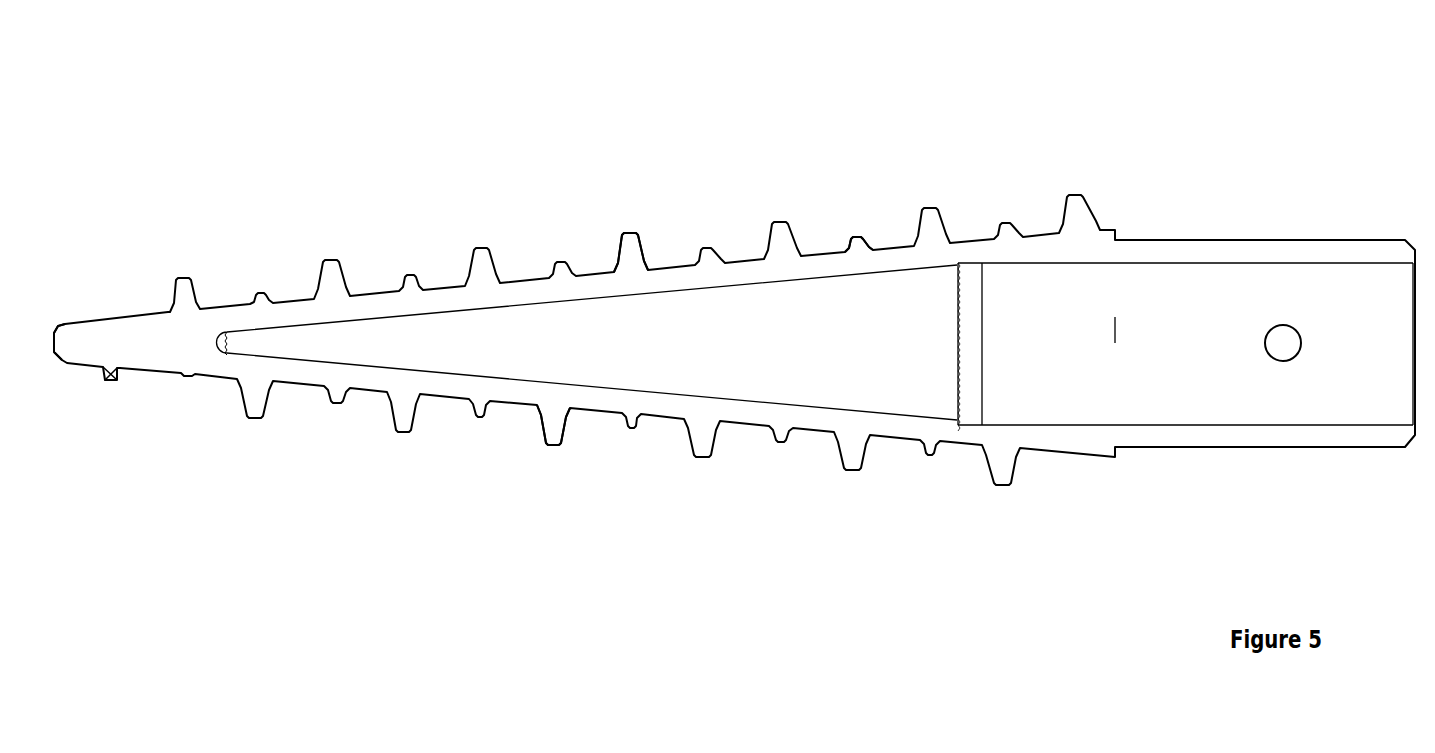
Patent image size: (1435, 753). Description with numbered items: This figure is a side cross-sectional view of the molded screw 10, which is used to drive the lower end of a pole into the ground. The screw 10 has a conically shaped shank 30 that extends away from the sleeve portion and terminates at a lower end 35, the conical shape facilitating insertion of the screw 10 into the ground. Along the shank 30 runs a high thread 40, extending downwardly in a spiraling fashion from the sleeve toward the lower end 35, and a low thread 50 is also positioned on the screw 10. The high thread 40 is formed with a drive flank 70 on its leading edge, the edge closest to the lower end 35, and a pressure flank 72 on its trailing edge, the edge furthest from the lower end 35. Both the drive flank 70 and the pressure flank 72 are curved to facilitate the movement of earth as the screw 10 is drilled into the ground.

The molded screw 10 is at (366, 116).
The shank 30 is at (1065, 453).
The lower end 35 is at (65, 342).
The high thread 40 is at (625, 213).
The low thread 50 is at (853, 213).
The drive flank 70 is at (540, 418).
The pressure flank 72 is at (567, 420).